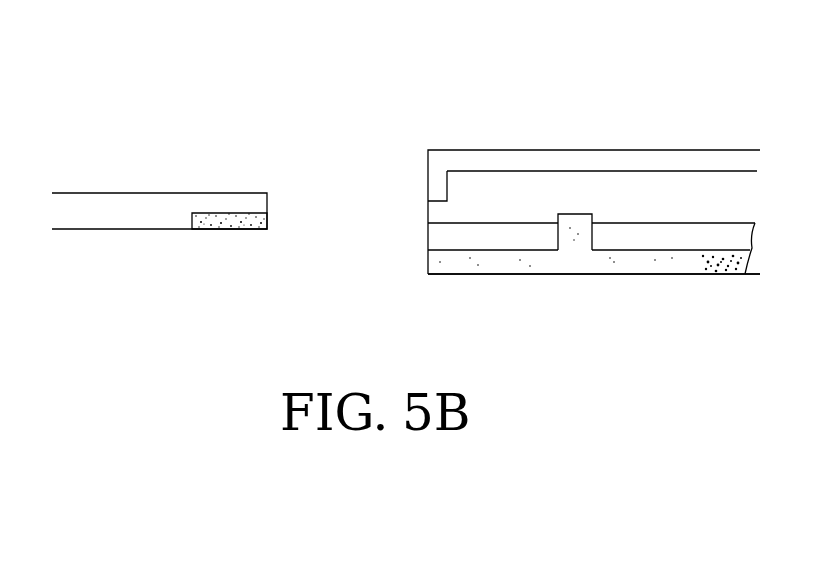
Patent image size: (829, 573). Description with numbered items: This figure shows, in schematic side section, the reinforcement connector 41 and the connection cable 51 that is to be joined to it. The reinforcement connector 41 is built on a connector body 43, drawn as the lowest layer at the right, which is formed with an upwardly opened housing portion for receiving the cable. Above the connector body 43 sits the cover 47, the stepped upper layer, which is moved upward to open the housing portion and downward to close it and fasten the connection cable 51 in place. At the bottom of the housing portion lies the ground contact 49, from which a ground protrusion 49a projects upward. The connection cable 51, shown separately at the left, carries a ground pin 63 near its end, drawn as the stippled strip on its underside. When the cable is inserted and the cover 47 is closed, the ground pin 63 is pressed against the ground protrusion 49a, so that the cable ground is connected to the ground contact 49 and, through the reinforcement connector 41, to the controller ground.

The reinforcement connector 41 is at (541, 73).
The connector body 43 is at (666, 282).
The cover 47 is at (470, 150).
The ground contact 49 is at (561, 193).
The ground protrusion 49a is at (580, 214).
The connection cable 51 is at (143, 192).
The ground pin 63 is at (220, 232).